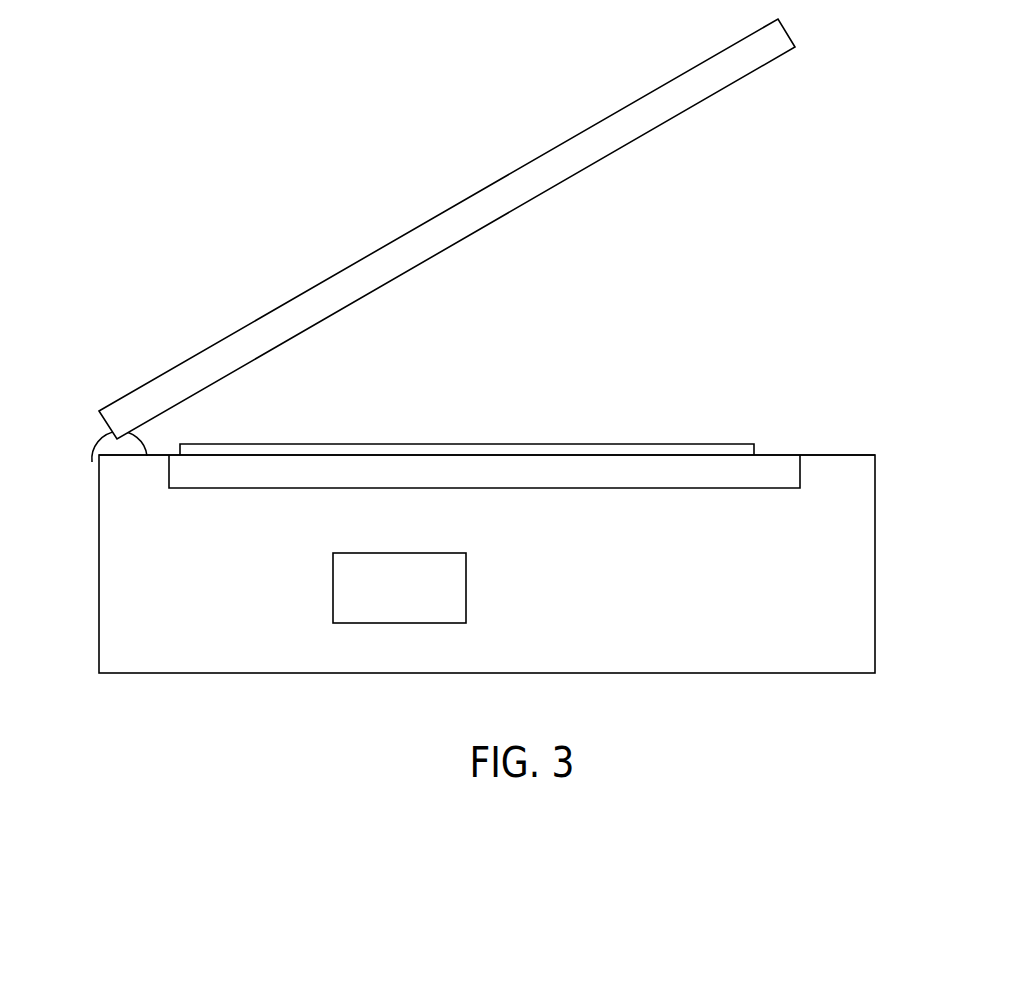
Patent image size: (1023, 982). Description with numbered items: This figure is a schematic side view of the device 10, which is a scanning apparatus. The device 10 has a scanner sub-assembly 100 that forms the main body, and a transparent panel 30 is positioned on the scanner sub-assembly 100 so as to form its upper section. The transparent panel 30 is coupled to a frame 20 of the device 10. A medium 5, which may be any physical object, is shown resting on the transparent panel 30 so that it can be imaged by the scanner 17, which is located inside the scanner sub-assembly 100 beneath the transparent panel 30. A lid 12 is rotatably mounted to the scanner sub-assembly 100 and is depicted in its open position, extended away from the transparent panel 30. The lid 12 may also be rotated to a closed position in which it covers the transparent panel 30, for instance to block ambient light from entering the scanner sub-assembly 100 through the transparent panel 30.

The device 10 is at (905, 103).
The lid 12 is at (512, 171).
The medium 5 is at (581, 445).
The transparent panel 30 is at (771, 458).
The frame 20 is at (876, 466).
The scanner 17 is at (407, 601).
The scanner sub-assembly 100 is at (876, 614).